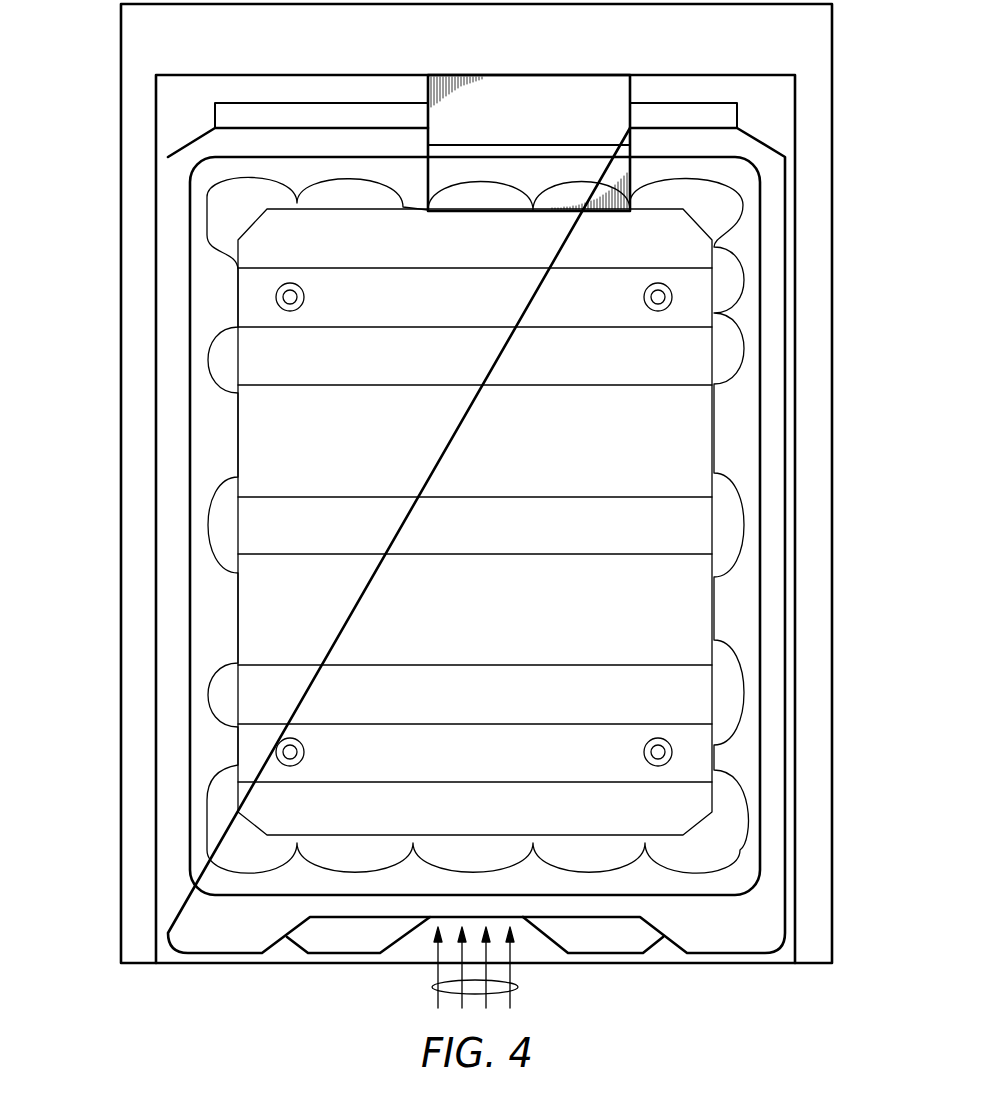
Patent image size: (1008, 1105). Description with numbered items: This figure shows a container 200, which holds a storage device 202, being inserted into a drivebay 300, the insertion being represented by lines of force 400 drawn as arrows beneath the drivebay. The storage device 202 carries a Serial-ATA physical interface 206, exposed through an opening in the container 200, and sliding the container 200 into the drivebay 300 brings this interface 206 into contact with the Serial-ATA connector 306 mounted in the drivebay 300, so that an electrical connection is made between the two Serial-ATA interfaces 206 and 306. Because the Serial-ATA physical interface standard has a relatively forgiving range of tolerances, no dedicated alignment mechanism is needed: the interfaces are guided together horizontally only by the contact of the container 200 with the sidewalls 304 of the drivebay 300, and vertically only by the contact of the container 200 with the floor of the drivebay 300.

The container 200 is at (218, 606).
The storage device 202 is at (495, 457).
The serial-ATA physical interface 206 is at (502, 162).
The drivebay 300 is at (832, 704).
The sidewalls 304 is at (797, 323).
The Serial-ATA connector 306 is at (595, 98).
The lines of force 400 is at (432, 987).